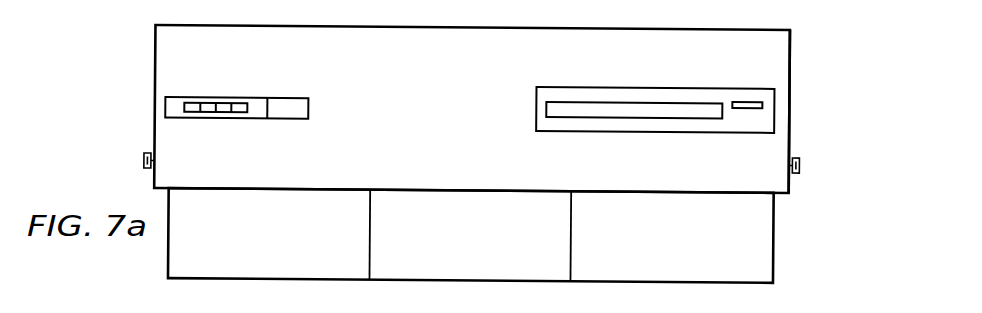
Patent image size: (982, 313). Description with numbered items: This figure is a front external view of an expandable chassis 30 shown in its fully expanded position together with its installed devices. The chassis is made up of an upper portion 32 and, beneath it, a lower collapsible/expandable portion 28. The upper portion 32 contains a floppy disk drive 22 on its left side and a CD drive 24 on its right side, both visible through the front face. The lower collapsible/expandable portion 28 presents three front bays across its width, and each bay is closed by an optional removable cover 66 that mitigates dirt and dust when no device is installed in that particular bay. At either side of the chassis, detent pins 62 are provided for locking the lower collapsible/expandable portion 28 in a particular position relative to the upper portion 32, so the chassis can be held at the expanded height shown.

The expandable chassis 30 is at (100, 97).
The upper portion 32 is at (790, 92).
The floppy disk drive 22 is at (238, 98).
The CD drive 24 is at (662, 133).
The detent pins 62 is at (144, 161).
The lower collapsible/expandable portion 28 is at (775, 232).
The removable cover 66 is at (282, 248).